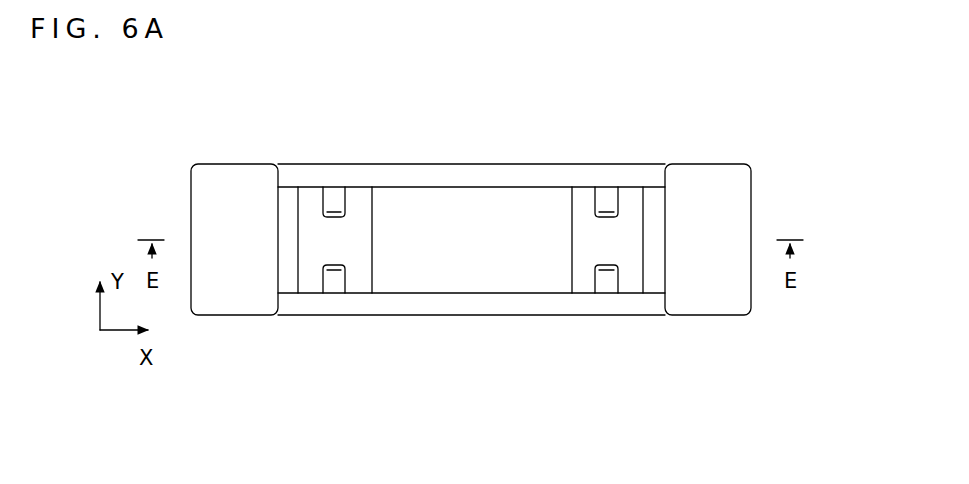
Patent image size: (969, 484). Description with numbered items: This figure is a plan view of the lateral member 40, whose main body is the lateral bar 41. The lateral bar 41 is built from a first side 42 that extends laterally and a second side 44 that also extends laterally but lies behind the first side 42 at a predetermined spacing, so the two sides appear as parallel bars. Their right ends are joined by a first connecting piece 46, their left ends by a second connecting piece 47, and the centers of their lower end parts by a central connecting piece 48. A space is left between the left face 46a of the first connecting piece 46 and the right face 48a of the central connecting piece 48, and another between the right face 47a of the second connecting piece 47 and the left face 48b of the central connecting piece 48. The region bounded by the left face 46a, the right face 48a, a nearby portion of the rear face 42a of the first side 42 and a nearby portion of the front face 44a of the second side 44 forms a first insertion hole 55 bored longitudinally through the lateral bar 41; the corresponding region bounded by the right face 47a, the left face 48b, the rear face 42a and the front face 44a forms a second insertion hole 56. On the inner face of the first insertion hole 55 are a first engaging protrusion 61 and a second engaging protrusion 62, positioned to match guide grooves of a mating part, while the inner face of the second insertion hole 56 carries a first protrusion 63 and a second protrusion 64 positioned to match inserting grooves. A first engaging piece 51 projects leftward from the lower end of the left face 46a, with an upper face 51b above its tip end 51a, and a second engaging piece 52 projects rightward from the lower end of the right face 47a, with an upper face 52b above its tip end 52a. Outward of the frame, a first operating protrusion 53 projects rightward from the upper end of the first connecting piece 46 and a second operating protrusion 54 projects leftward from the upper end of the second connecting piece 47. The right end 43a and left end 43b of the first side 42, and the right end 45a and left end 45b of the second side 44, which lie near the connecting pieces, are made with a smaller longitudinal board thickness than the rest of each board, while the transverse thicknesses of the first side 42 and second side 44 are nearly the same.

The lateral member 40 is at (734, 136).
The lateral bar 41 is at (486, 154).
The first side 42 is at (458, 310).
The rear face of the first side 42a is at (423, 283).
The right end of the first side 43a is at (650, 268).
The left end of the first side 43b is at (278, 275).
The second side 44 is at (403, 172).
The front face of the second side 44a is at (436, 186).
The right end of the second side 45a is at (660, 165).
The left end of the second side 45b is at (295, 172).
The first connecting piece 46 is at (682, 177).
The left face of the first connecting piece 46a is at (645, 313).
The second connecting piece 47 is at (255, 178).
The right face of the second connecting piece 47a is at (277, 316).
The central connecting piece 48 is at (497, 283).
The right face of the central connecting piece 48a is at (573, 285).
The left face of the central connecting piece 48b is at (370, 277).
The first engaging piece 51 is at (641, 202).
The tip end of the first engaging piece 51a is at (640, 266).
The upper face of the first engaging piece 51b is at (650, 200).
The second engaging piece 52 is at (302, 195).
The tip end of the second engaging piece 52a is at (300, 275).
The upper face of the second engaging piece 52b is at (285, 187).
The first operating protrusion 53 is at (742, 180).
The second operating protrusion 54 is at (200, 192).
The first insertion hole 55 is at (582, 205).
The second insertion hole 56 is at (358, 198).
The first engaging protrusion 61 is at (616, 273).
The second engaging protrusion 62 is at (622, 202).
The first protrusion 63 is at (325, 273).
The second protrusion 64 is at (313, 198).